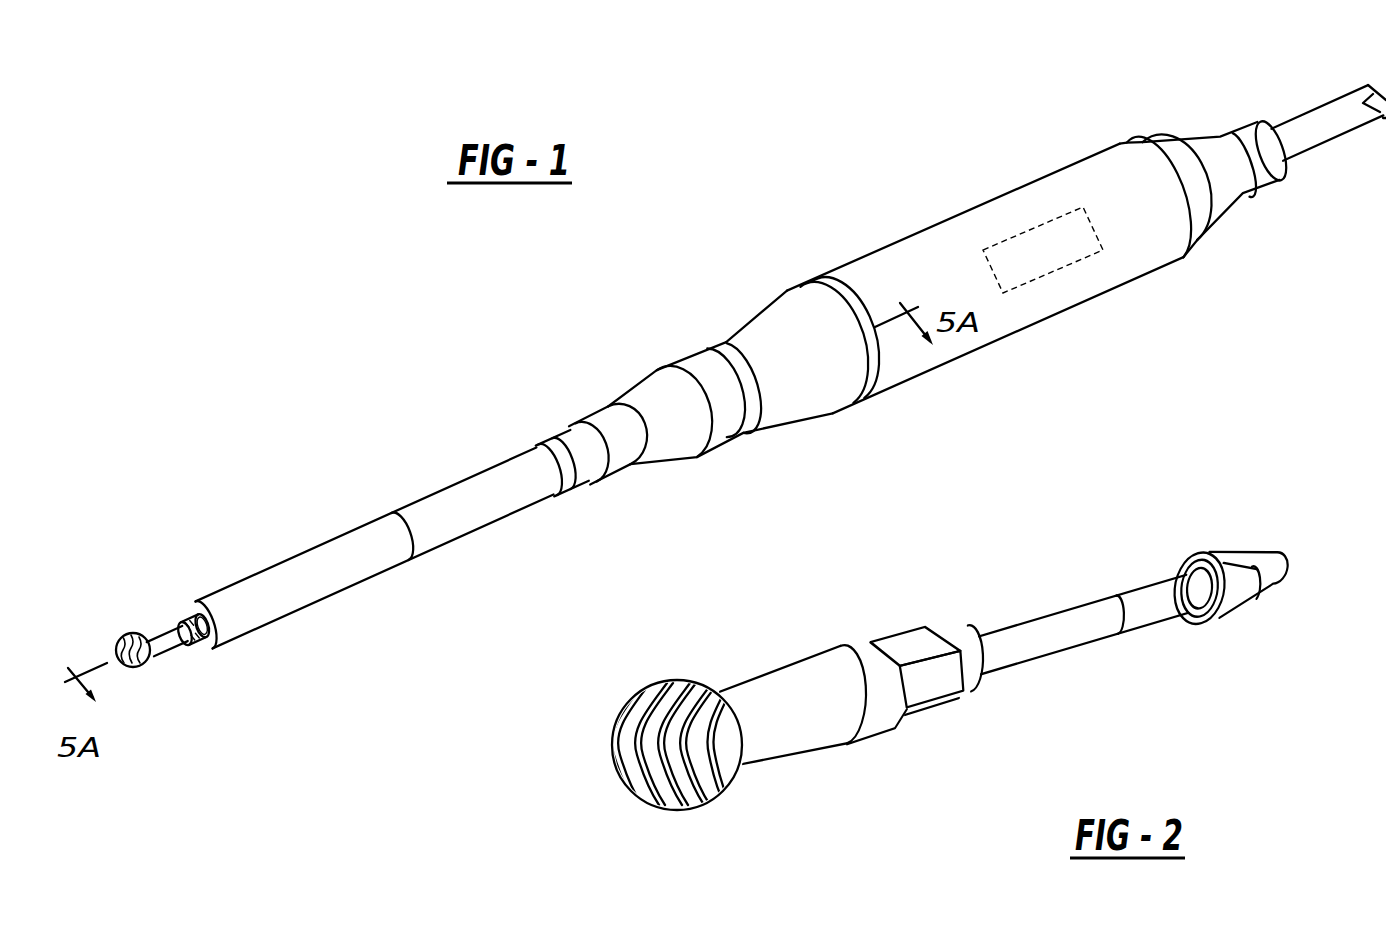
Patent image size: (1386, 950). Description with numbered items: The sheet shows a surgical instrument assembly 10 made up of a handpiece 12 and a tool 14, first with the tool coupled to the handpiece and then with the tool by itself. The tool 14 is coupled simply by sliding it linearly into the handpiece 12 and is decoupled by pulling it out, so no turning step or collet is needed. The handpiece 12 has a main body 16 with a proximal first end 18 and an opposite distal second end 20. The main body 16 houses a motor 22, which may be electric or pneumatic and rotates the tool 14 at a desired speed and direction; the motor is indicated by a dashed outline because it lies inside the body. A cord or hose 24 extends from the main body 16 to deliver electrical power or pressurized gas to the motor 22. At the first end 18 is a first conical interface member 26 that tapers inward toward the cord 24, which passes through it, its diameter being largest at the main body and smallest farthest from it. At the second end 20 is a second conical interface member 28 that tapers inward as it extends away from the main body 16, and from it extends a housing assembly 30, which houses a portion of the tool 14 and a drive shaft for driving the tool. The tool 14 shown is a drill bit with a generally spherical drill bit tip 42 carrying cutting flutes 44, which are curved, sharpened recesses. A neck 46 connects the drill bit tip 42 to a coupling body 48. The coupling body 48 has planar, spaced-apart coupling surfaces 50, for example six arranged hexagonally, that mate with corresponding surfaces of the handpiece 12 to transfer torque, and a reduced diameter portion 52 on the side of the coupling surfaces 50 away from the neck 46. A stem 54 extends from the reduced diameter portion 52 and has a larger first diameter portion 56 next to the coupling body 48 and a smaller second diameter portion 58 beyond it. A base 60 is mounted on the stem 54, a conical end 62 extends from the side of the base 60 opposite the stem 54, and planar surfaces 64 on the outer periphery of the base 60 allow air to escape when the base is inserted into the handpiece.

In FIG. 1, the surgical instrument assembly 10 is at (275, 300).
In FIG. 1, the handpiece 12 is at (985, 170).
In FIG. 1, the tool 14 is at (159, 636).
In FIG. 2, the tool 14 is at (1230, 712).
In FIG. 1, the main body 16 is at (910, 257).
In FIG. 1, the first end 18 is at (1192, 200).
In FIG. 1, the second end 20 is at (832, 284).
In FIG. 1, the motor 22 is at (1023, 266).
In FIG. 1, the cord or hose 24 is at (1337, 115).
In FIG. 1, the first conical interface member 26 is at (1277, 60).
In FIG. 1, the second conical interface member 28 is at (757, 272).
In FIG. 1, the housing assembly 30 is at (583, 397).
In FIG. 2, the drill bit tip 42 is at (616, 711).
In FIG. 2, the cutting flutes 44 is at (714, 764).
In FIG. 2, the neck 46 is at (785, 754).
In FIG. 2, the coupling body 48 is at (947, 587).
In FIG. 2, the coupling surfaces 50 is at (925, 642).
In FIG. 2, the reduced diameter portion 52 is at (975, 675).
In FIG. 2, the stem 54 is at (1042, 613).
In FIG. 2, the first diameter portion 56 is at (1062, 650).
In FIG. 2, the second diameter portion 58 is at (1160, 603).
In FIG. 2, the base 60 is at (1221, 557).
In FIG. 2, the conical end 62 is at (1283, 562).
In FIG. 2, the planar surfaces 64 is at (1250, 569).